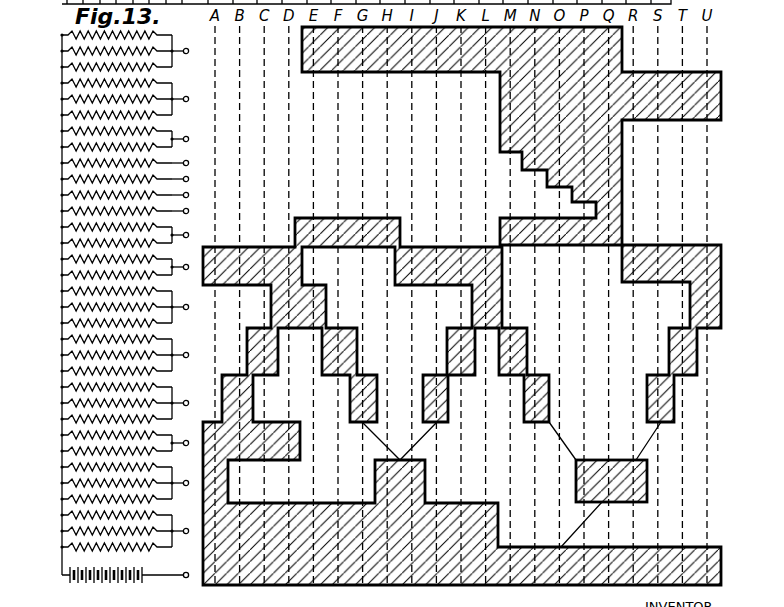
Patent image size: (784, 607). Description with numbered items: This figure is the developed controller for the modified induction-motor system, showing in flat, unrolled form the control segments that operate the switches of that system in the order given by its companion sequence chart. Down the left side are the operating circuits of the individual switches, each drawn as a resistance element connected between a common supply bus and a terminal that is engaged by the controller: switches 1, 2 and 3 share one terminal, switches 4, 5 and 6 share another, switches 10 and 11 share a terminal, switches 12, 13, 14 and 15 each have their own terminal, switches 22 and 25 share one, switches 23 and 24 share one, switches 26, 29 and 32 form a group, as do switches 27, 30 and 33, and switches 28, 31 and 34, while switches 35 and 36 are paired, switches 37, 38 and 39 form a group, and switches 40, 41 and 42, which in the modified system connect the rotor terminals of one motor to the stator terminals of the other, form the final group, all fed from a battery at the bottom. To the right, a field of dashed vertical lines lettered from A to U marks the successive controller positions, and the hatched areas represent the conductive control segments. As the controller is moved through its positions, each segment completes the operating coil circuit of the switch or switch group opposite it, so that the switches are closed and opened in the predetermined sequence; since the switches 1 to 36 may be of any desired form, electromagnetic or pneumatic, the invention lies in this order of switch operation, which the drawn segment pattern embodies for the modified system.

The switch 1 is at (106, 43).
The switch 2 is at (98, 58).
The switch 3 is at (106, 73).
The switch 4 is at (98, 89).
The switch 5 is at (106, 104).
The switch 6 is at (98, 121).
The switch 10 is at (103, 136).
The switch 11 is at (92, 149).
The switch 12 is at (112, 164).
The switch 13 is at (100, 179).
The switch 14 is at (110, 192).
The switch 15 is at (100, 208).
The switch 22 is at (103, 224).
The switch 25 is at (90, 240).
The switch 23 is at (103, 256).
The switch 24 is at (89, 272).
The switch 26 is at (102, 288).
The switch 29 is at (90, 304).
The switch 32 is at (102, 320).
The switch 27 is at (89, 336).
The switch 30 is at (102, 352).
The switch 33 is at (89, 368).
The switch 28 is at (101, 384).
The switch 31 is at (87, 400).
The switch 34 is at (101, 416).
The switch 35 is at (89, 432).
The switch 36 is at (102, 448).
The resistance unit 37 is at (90, 464).
The resistance unit 38 is at (101, 480).
The resistance unit 39 is at (89, 496).
The switch 40 is at (101, 512).
The switch 41 is at (87, 528).
The switch 42 is at (101, 544).